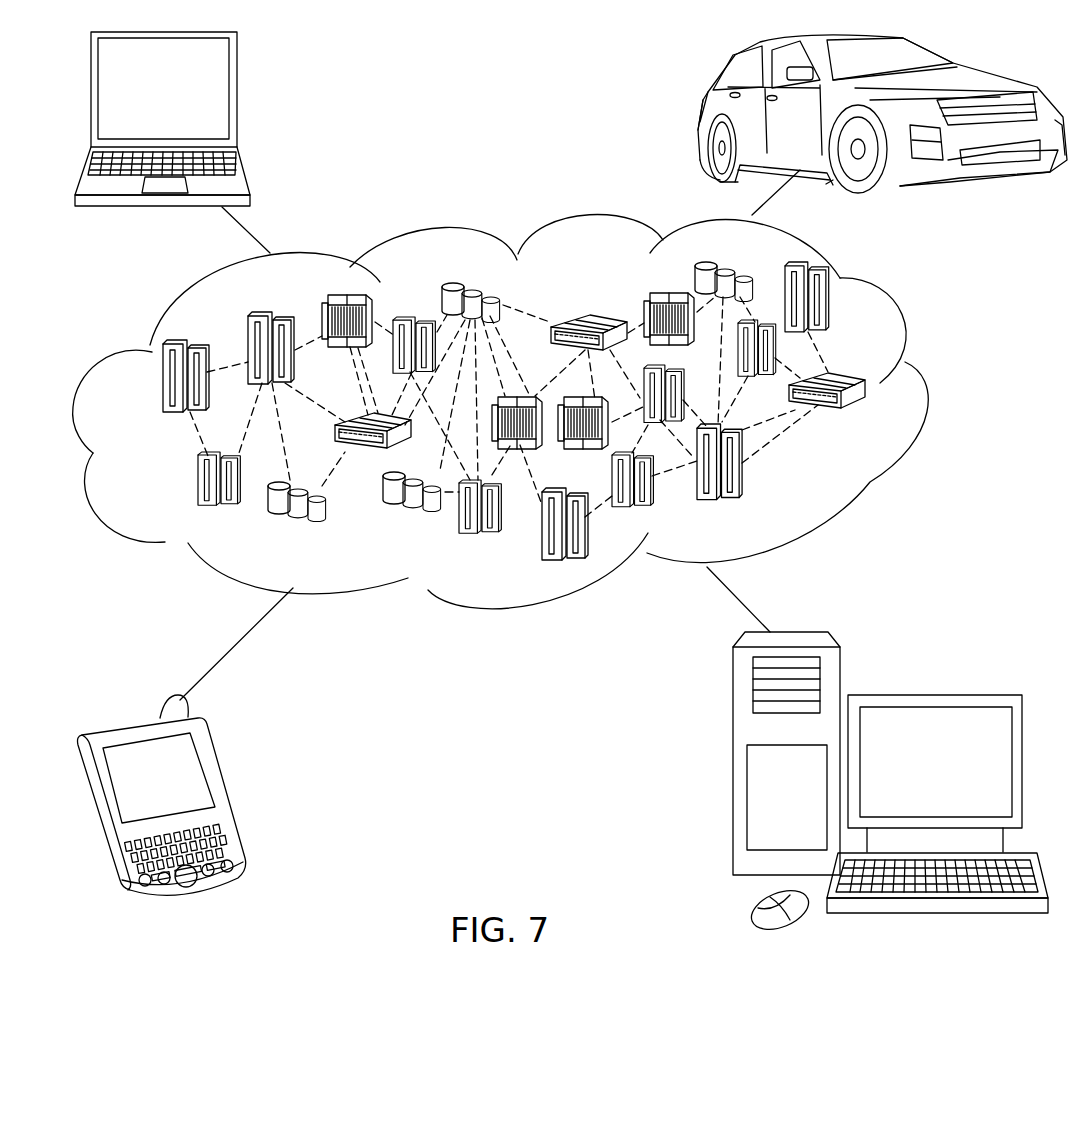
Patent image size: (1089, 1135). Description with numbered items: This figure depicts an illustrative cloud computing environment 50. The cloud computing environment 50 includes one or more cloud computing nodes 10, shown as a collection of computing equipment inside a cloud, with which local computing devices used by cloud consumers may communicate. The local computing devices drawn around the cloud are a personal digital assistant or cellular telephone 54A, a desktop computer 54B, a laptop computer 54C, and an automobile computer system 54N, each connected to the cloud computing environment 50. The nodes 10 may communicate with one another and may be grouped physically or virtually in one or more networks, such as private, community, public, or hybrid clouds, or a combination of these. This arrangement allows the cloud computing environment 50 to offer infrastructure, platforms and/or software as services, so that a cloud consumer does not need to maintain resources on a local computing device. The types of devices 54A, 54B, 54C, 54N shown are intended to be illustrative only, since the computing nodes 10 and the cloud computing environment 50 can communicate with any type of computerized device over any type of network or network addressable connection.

The cloud computing node 10 is at (882, 422).
The cloud computing environment 50 is at (932, 385).
The personal digital assistant (PDA) or cellular telephone 54A is at (230, 790).
The desktop computer 54B is at (933, 693).
The laptop computer 54C is at (237, 97).
The automobile computer system 54N is at (703, 112).